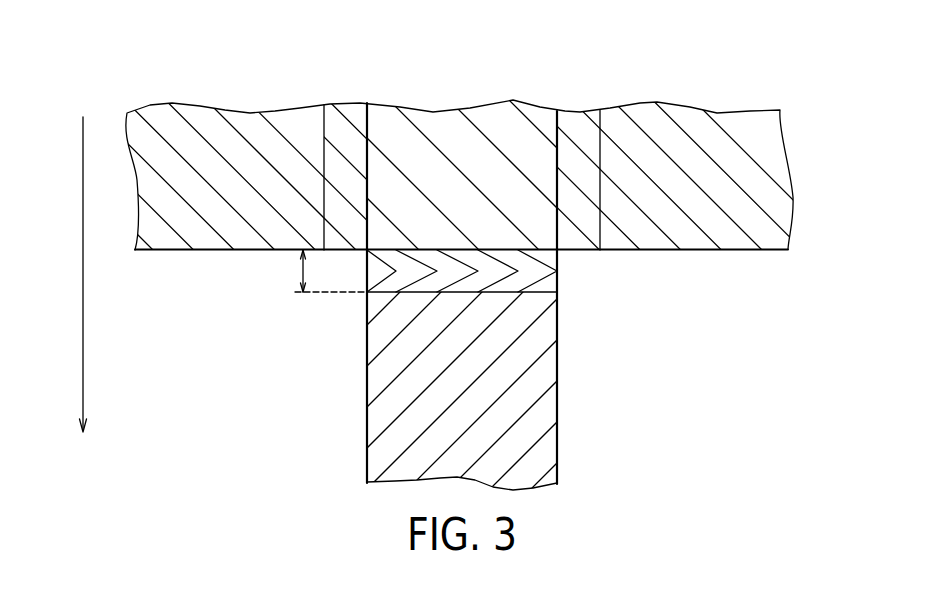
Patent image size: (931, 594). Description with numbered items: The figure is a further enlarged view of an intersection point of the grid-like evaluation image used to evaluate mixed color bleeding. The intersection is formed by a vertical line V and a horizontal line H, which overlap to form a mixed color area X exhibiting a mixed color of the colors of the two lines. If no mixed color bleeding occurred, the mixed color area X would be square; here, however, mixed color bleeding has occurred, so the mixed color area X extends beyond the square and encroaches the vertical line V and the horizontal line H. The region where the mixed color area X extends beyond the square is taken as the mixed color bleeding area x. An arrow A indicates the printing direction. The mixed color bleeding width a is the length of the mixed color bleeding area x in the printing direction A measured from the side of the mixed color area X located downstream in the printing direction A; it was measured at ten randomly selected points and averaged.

The horizontal line H is at (168, 238).
The mixed color area X is at (453, 128).
The mixed color bleeding area x is at (343, 123).
The vertical line V is at (543, 367).
The mixed color bleeding width a is at (300, 273).
The printing direction A is at (83, 251).